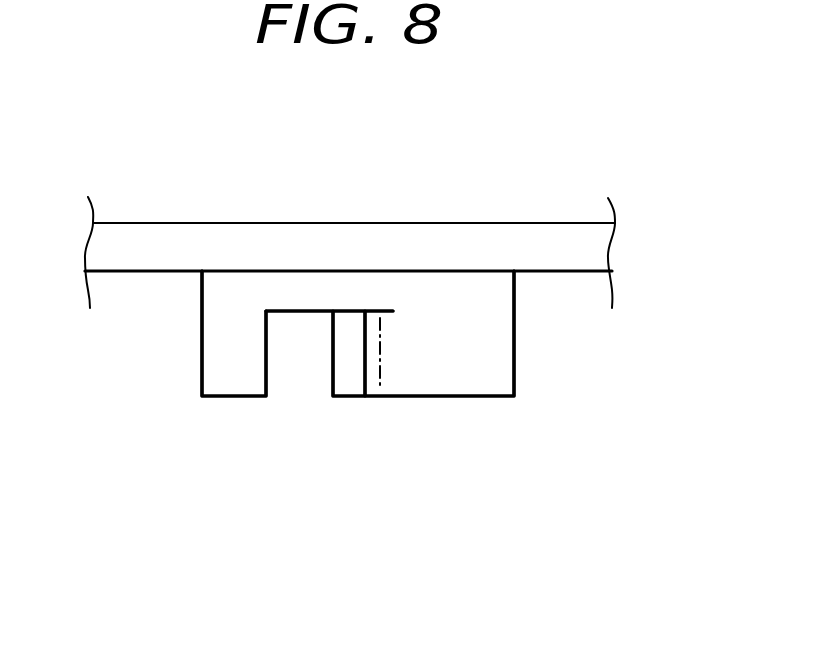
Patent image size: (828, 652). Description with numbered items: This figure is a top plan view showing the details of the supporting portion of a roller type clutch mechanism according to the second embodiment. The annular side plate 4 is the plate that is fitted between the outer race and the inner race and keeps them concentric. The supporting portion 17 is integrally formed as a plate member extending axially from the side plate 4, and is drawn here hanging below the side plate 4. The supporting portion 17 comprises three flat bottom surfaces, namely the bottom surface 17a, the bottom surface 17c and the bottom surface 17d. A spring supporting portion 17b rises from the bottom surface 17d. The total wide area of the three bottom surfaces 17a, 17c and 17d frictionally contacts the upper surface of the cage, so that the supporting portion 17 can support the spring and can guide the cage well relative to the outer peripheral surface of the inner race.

The side plate 4 is at (525, 242).
The supporting portion 17 is at (419, 328).
The bottom surface 17a is at (230, 380).
The spring supporting portion 17b is at (345, 378).
The bottom surface 17c is at (297, 292).
The bottom surface 17d is at (495, 368).